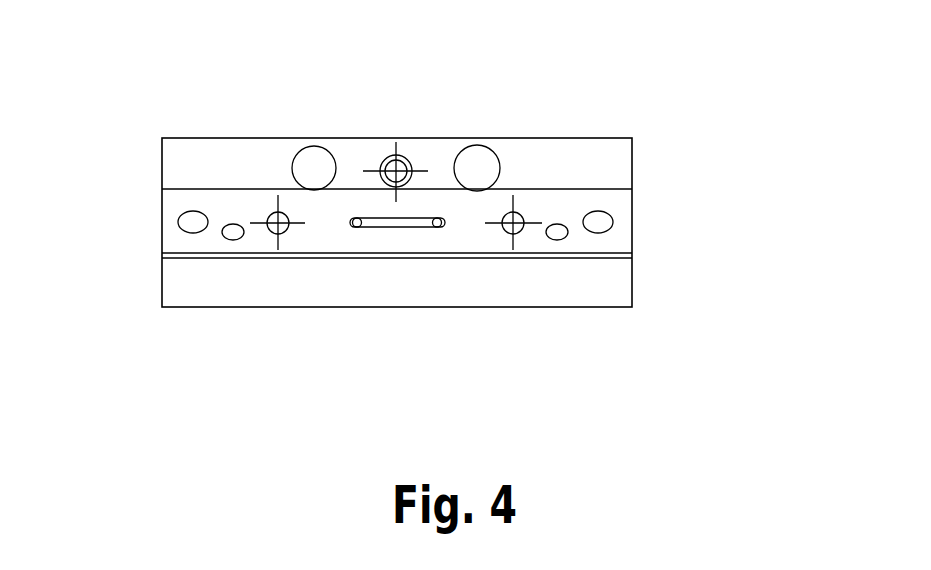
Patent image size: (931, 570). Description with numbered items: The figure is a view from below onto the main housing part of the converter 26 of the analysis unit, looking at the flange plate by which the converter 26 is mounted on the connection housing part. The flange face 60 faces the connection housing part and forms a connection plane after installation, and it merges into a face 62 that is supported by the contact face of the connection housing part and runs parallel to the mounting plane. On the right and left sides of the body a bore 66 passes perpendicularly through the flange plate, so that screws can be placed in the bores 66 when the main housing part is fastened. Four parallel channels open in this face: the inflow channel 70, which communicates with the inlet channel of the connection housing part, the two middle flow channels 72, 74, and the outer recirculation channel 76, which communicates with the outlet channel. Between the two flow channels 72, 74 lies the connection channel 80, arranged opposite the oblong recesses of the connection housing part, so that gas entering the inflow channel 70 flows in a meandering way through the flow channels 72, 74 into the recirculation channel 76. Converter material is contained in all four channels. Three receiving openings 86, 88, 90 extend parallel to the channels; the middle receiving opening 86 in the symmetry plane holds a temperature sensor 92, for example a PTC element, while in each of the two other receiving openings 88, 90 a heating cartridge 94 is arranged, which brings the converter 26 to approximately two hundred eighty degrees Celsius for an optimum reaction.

The converter 26 is at (700, 178).
The flange face 60 is at (633, 241).
The face 62 is at (199, 163).
The bore 66 is at (197, 222).
The inflow channel 70 is at (515, 234).
The flow channel 72 is at (443, 228).
The flow channel 74 is at (355, 226).
The recirculation channel 76 is at (278, 234).
The connection channel 80 is at (379, 191).
The receiving opening 86 is at (393, 122).
The receiving opening 88 is at (314, 166).
The receiving opening 90 is at (478, 170).
The temperature sensor 92 is at (398, 158).
The heating cartridge 94 is at (416, 117).